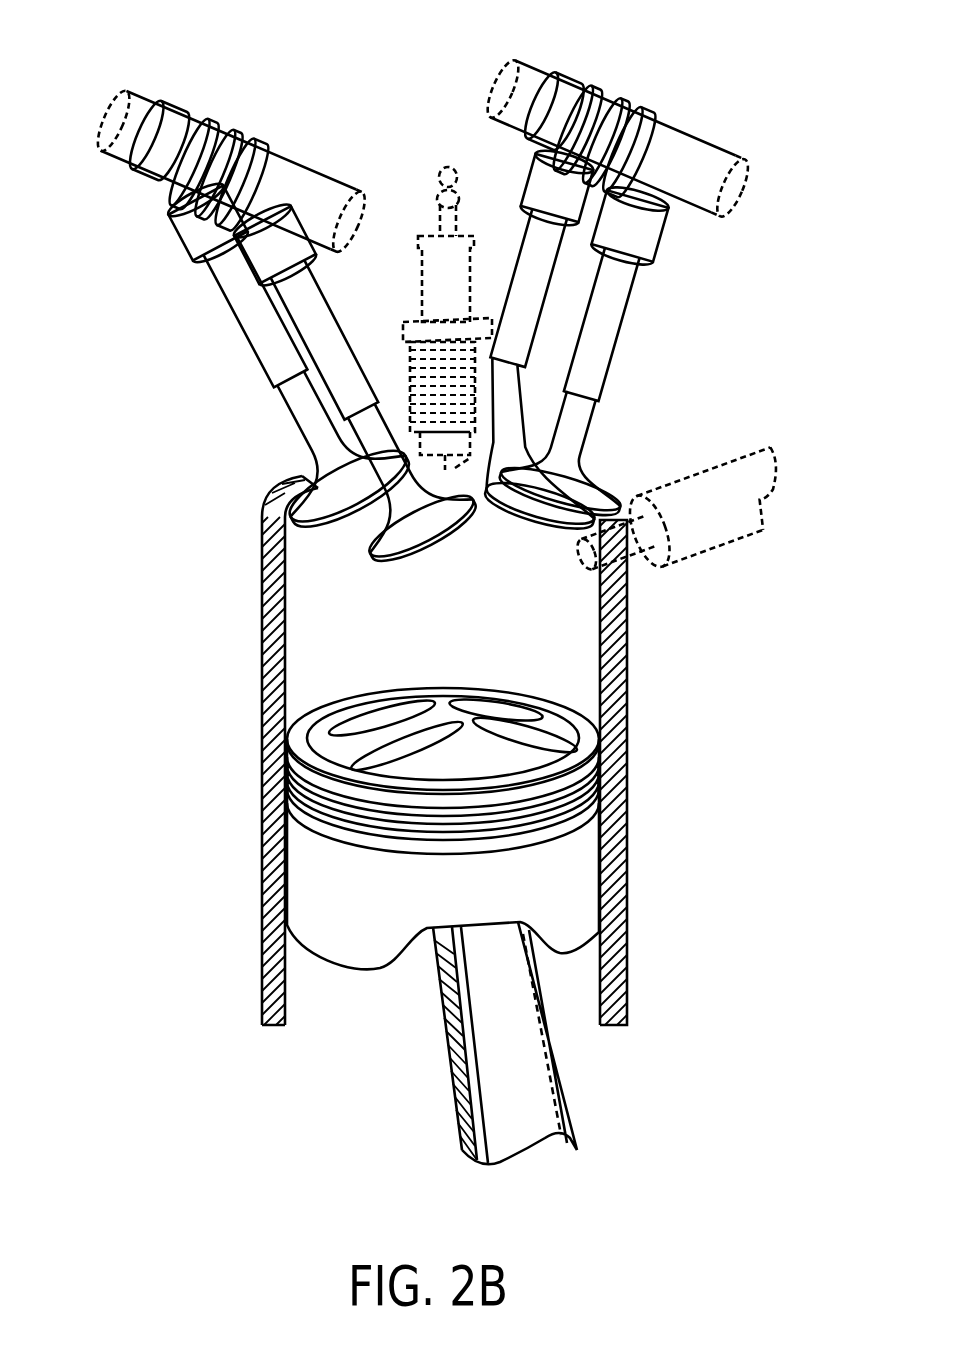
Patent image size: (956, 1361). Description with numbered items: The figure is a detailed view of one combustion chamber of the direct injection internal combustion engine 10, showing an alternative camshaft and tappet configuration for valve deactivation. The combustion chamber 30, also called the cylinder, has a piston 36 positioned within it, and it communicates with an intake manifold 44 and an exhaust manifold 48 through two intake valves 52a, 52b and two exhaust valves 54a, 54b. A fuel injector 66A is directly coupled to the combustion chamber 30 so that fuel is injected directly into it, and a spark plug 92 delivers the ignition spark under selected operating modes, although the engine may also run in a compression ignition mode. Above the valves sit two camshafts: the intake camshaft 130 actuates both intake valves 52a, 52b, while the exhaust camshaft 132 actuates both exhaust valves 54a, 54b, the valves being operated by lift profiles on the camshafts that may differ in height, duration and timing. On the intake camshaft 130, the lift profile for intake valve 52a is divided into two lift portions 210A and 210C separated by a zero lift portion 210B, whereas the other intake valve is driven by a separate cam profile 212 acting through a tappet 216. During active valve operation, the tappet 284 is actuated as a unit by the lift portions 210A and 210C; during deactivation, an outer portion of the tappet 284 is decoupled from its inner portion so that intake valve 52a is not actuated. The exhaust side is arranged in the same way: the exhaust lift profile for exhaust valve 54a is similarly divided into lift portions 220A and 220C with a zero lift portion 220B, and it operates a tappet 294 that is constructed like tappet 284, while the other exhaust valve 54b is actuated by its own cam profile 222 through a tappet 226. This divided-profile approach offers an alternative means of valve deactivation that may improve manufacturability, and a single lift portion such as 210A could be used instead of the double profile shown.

The direct injection internal combustion engine 10 is at (137, 807).
The combustion chamber 30 is at (458, 632).
The piston 36 is at (307, 887).
The intake manifold 44 is at (770, 113).
The exhaust manifold 48 is at (178, 387).
The intake valve 52a is at (610, 302).
The intake valve 52b is at (533, 292).
The exhaust valve 54a is at (317, 478).
The exhaust valve 54b is at (300, 398).
The fuel injector 66A is at (772, 500).
The spark plug 92 is at (463, 250).
The intake camshaft 130 is at (767, 212).
The exhaust camshaft 132 is at (122, 98).
The lift portion 210A is at (630, 117).
The zero lift portion 210B is at (633, 112).
The lift portion 210C is at (673, 127).
The cam profile 212 is at (567, 80).
The tappet 216 is at (543, 200).
The first intake cam lobe 220A is at (237, 140).
The second intake cam lobe 220B is at (247, 128).
The third intake cam lobe 220C is at (280, 153).
The cam profile 222 is at (182, 108).
The tappet 226 is at (200, 230).
The tappet 284 is at (643, 238).
The tappet 294 is at (277, 262).